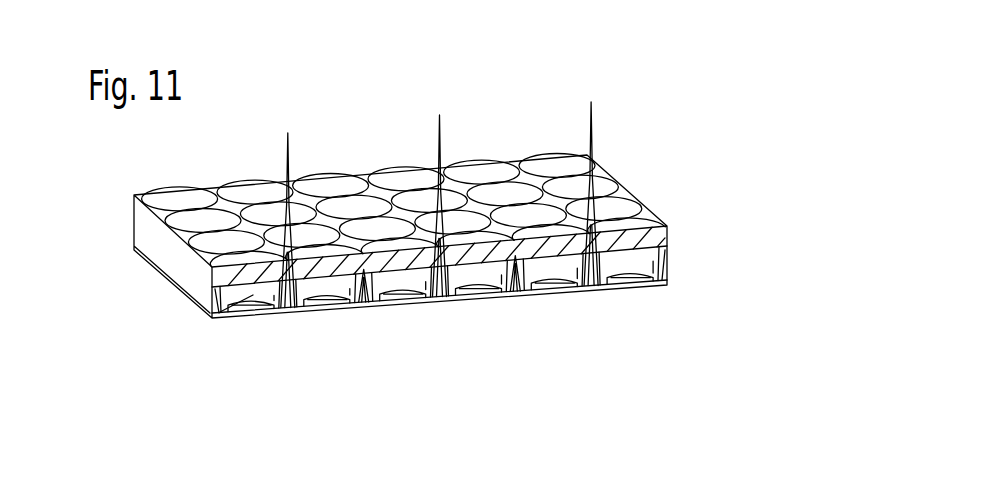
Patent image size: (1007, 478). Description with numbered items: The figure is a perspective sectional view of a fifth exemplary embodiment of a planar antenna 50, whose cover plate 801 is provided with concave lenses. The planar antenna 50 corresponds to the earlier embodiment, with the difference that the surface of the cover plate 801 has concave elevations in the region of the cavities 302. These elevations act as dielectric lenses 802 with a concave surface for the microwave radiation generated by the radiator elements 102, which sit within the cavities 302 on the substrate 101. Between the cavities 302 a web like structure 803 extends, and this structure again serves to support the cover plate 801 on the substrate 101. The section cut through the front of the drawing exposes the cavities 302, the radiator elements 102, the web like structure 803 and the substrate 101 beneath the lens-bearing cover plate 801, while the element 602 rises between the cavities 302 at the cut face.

The planar antenna 50 is at (512, 147).
The substrate 101 is at (237, 320).
The radiator elements 102 is at (248, 320).
The cavities 302 is at (205, 320).
The partition spike 602 is at (440, 193).
The cover plate 801 is at (620, 243).
The dielectric lenses 802 is at (258, 264).
The web like structure 803 is at (212, 300).